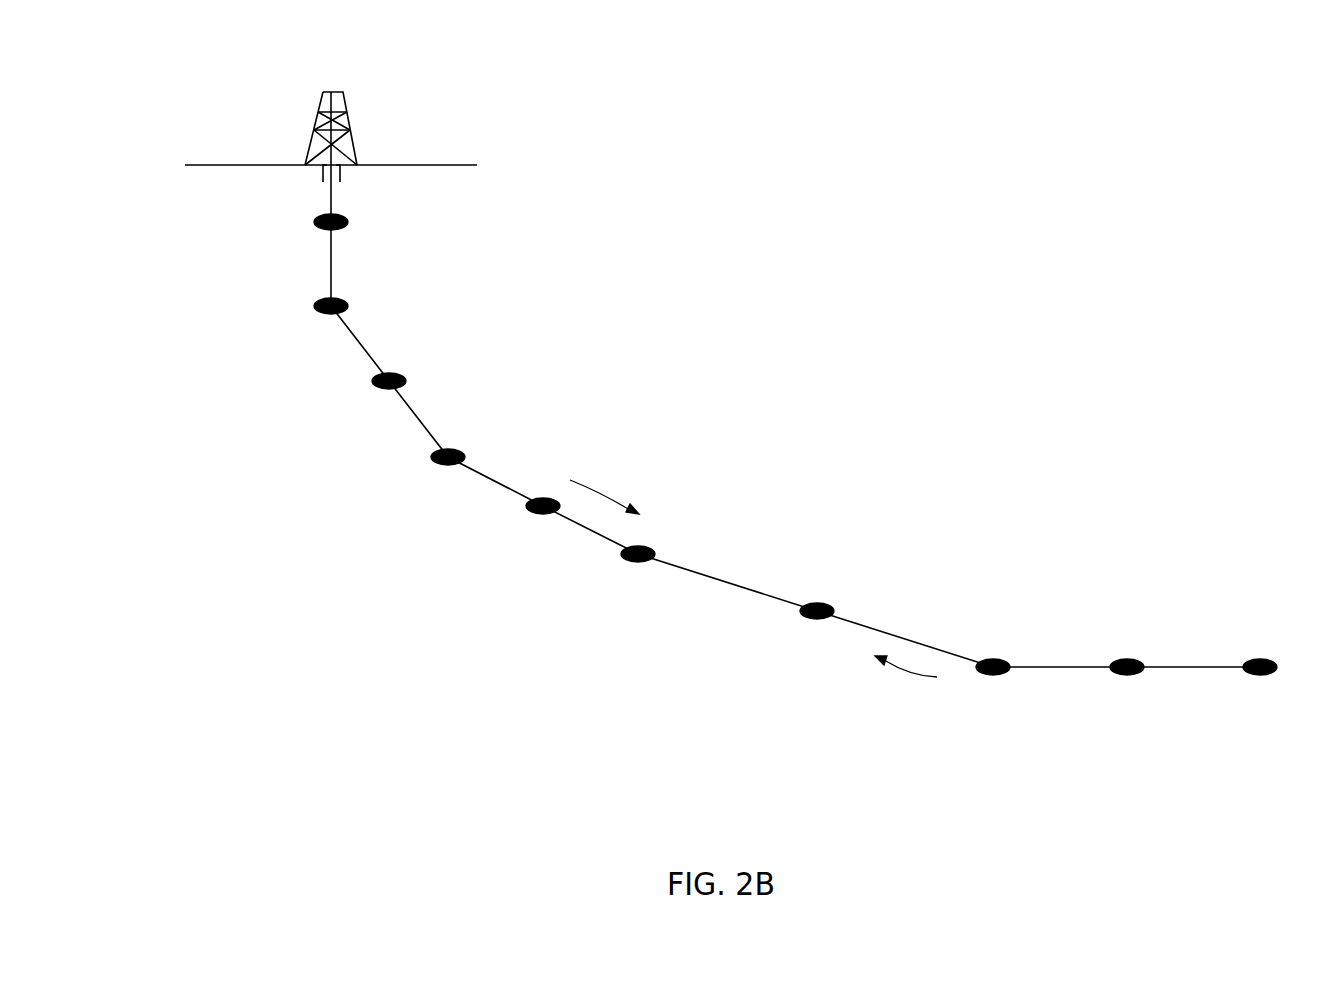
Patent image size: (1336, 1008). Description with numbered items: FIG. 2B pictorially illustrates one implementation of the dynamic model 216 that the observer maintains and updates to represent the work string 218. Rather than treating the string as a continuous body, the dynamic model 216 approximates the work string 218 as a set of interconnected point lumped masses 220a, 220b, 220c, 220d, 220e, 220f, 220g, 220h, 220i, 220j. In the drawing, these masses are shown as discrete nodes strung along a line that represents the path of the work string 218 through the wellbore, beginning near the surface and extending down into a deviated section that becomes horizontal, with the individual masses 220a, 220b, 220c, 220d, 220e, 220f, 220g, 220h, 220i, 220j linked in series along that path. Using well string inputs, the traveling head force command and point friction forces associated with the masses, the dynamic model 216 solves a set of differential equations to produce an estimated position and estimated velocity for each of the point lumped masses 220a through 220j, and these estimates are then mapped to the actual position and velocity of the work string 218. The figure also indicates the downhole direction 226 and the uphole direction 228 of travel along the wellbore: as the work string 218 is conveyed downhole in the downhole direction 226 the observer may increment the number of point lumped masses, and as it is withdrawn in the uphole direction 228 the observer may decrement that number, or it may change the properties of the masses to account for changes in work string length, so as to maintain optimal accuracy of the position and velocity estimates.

The dynamic model 216 is at (193, 56).
The work string 218 is at (367, 343).
The point lumped mass 220a is at (314, 219).
The point lumped mass 220b is at (314, 304).
The point lumped mass 220c is at (372, 380).
The point lumped mass 220d is at (431, 463).
The point lumped mass 220e is at (526, 512).
The point lumped mass 220f is at (623, 560).
The point lumped mass 220g is at (801, 619).
The point lumped mass 220h is at (985, 675).
The point lumped mass 220i is at (1119, 675).
The point lumped mass 220j is at (1252, 675).
The downhole direction 226 is at (596, 497).
The uphole direction 228 is at (903, 677).